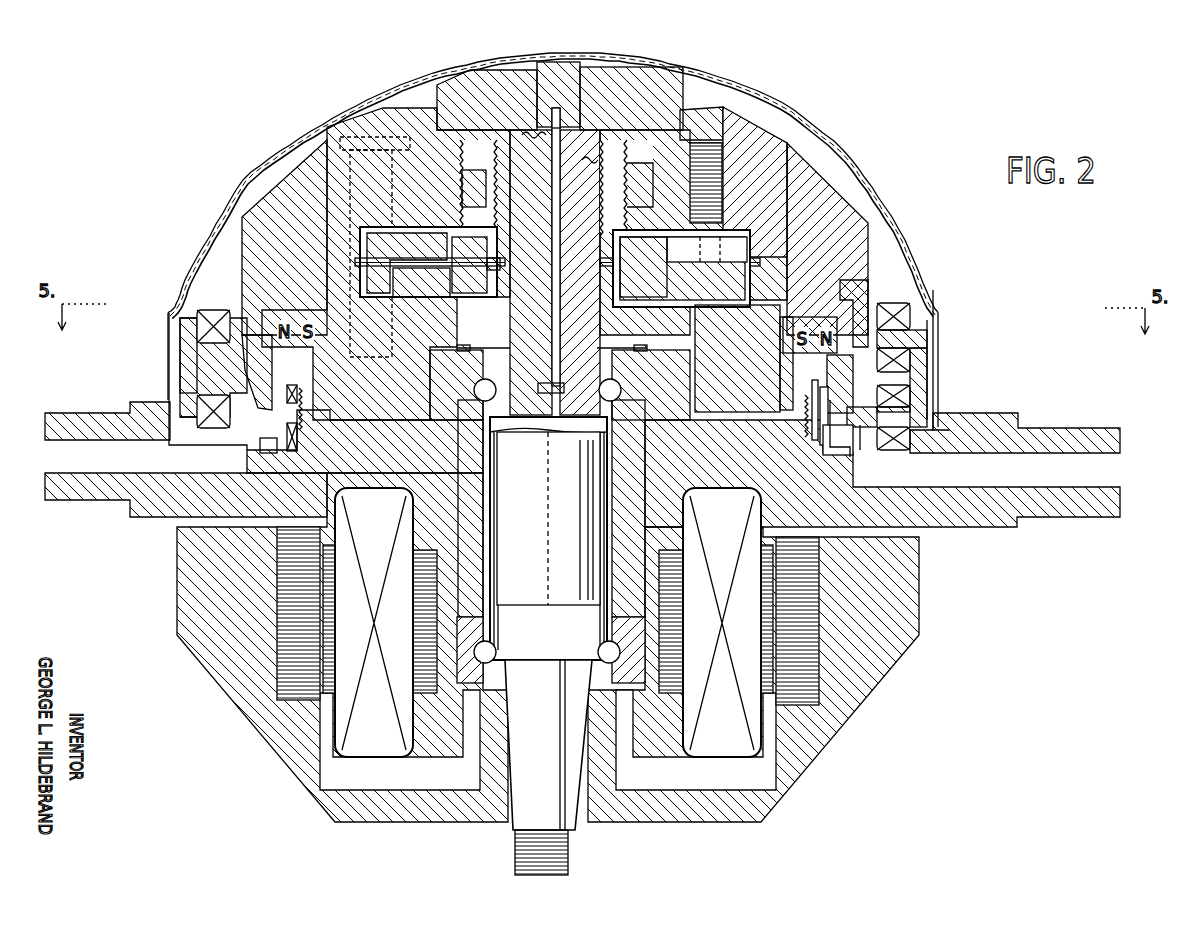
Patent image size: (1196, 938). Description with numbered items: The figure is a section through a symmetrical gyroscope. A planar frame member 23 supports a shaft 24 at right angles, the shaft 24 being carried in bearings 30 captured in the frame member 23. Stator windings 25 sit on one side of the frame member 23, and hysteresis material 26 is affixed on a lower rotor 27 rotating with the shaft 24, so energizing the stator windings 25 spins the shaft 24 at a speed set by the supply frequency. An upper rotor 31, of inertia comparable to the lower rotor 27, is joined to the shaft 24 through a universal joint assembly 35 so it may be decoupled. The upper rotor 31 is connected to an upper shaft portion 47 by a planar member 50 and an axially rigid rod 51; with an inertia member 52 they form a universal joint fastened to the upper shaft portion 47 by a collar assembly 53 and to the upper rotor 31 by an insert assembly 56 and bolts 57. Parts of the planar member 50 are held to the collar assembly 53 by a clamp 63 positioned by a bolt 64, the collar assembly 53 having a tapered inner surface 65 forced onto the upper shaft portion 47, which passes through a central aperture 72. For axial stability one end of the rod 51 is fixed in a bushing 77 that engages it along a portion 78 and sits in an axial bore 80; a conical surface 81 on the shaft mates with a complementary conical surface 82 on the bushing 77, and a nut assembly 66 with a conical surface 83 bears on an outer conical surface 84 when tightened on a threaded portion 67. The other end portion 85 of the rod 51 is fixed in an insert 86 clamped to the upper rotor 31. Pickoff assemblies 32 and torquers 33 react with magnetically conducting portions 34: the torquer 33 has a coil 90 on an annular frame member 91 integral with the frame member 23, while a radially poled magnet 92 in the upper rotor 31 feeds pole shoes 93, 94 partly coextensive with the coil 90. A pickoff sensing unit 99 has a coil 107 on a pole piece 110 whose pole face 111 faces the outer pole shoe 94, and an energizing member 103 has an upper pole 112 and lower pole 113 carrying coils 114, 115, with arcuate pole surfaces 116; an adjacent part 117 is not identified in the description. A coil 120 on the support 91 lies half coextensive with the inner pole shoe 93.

The planar frame member 23 is at (935, 520).
The shaft 24 is at (522, 860).
The stator windings 25 is at (731, 623).
The hysteresis material 26 is at (800, 598).
The lower rotor 27 is at (895, 630).
The bearings 30 is at (632, 400).
The upper rotor 31 is at (258, 212).
The pickoff assembly 32 is at (143, 376).
The torquer 33 is at (832, 452).
The magnetically conducting portions 34 is at (862, 312).
The universal joint assembly 35 is at (650, 236).
The upper shaft portion 47 is at (582, 348).
The planar member 50 is at (447, 268).
The axially rigid rod 51 is at (527, 112).
The inertia member 52 is at (467, 247).
The collar assembly 53 is at (648, 325).
The insert assembly 56 is at (355, 122).
The bolts 57 is at (330, 128).
The clamp 63 is at (672, 245).
The bolt 64 is at (737, 358).
The tapered inner surface 65 is at (600, 298).
The nut assembly 66 is at (615, 148).
The threaded portion 67 is at (620, 172).
The central aperture 72 is at (495, 262).
The bushing 77 is at (585, 128).
The engaged portion of rod 78 is at (590, 412).
The axial bore 80 is at (555, 414).
The conical surface 81 is at (487, 188).
The complementary conical surface 82 is at (470, 172).
The conical surface of nut 83 is at (522, 134).
The outer conical surface 84 is at (592, 158).
The end portion of rod 85 is at (553, 105).
The insert 86 is at (570, 66).
The torquer coil 90 is at (822, 455).
The annular frame member 91 is at (800, 415).
The magnet 92 is at (800, 322).
The inner pole shoe 93 is at (785, 375).
The outer pole shoe 94 is at (842, 384).
The pickoff sensing unit 99 is at (180, 360).
The energizing member 103 is at (915, 345).
The coil 107 is at (214, 311).
The pole piece 110 is at (190, 350).
The pole face 111 is at (185, 378).
The upper pole 112 is at (912, 334).
The lower pole 113 is at (930, 415).
The coil 114 is at (905, 306).
The coil 115 is at (912, 397).
The pole surfaces 116 is at (862, 437).
The support 117 is at (925, 368).
The coil 120 is at (815, 432).